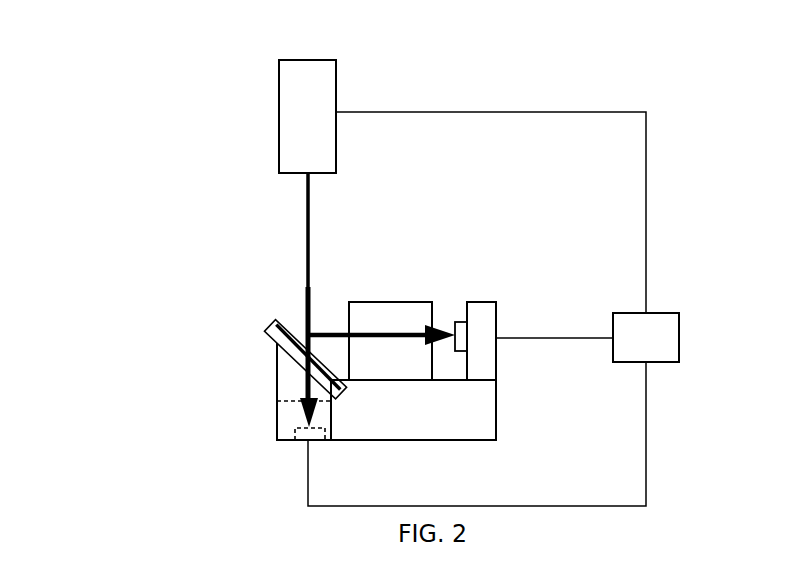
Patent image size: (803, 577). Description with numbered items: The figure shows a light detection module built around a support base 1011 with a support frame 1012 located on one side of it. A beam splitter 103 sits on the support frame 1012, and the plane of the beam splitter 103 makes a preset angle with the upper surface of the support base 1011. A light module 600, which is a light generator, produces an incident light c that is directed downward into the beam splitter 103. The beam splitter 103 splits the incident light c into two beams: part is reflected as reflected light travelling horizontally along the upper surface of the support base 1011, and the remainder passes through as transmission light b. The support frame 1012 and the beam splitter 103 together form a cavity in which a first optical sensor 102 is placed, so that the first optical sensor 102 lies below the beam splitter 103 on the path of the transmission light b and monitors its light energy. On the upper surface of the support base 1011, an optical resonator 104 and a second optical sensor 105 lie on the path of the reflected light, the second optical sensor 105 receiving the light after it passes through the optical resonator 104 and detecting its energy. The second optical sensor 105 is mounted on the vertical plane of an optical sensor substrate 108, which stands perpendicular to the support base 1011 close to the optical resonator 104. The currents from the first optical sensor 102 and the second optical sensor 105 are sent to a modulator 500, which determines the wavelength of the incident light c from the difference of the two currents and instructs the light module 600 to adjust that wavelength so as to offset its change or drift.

The light module 600 is at (307, 116).
The modulator 500 is at (646, 337).
The beam splitter 103 is at (291, 327).
The optical resonator 104 is at (363, 317).
The second optical sensor 105 is at (458, 335).
The optical sensor substrate 108 is at (478, 325).
The support base 1011 is at (475, 410).
The support frame 1012 is at (283, 363).
The first optical sensor 102 is at (305, 431).
The incident light c is at (307, 225).
The transmission light b is at (334, 386).